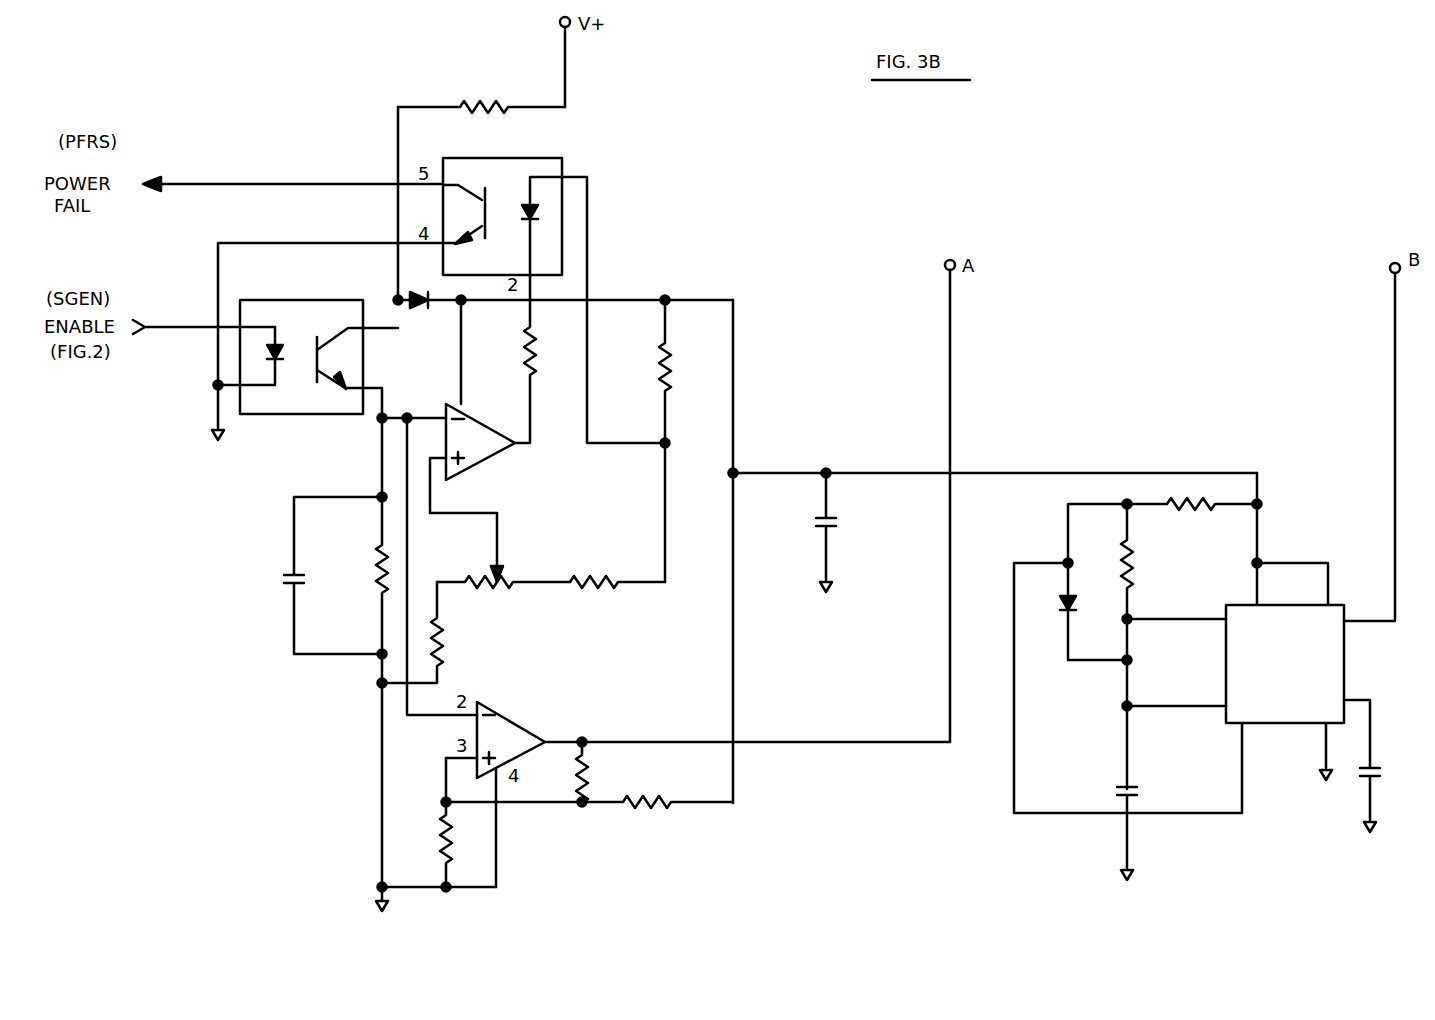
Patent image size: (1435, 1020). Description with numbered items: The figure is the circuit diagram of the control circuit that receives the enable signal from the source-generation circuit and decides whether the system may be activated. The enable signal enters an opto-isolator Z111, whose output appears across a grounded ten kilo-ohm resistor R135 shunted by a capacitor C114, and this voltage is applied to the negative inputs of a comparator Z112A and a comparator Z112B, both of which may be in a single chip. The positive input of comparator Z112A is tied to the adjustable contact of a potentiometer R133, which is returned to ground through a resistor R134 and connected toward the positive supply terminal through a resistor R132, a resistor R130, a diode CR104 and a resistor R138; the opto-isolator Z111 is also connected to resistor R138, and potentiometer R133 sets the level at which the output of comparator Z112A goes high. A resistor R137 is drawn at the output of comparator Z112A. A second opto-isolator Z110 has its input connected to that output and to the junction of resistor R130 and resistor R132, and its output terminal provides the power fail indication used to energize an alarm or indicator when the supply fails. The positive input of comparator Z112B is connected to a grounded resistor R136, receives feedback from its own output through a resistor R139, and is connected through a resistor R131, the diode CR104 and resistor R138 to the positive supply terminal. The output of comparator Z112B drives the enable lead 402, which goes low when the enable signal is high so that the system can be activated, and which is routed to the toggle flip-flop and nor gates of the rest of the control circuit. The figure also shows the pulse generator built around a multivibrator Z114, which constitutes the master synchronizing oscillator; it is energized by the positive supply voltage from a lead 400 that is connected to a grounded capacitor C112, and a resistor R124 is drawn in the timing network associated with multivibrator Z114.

The resistor R138 is at (468, 104).
The second opto-isolator Z110 is at (500, 170).
The opto-isolator Z111 is at (296, 300).
The diode CR104 is at (432, 310).
The resistor R137 is at (528, 338).
The resistor R130 is at (658, 356).
The comparator Z112A is at (490, 452).
The capacitor C114 is at (280, 578).
The resistor R135 is at (374, 568).
The potentiometer R133 is at (494, 586).
The resistor R132 is at (586, 586).
The resistor R134 is at (440, 648).
The comparator Z112B is at (522, 730).
The resistor R139 is at (590, 782).
The resistor R136 is at (438, 844).
The resistor R131 is at (650, 806).
The capacitor C112 is at (838, 522).
The lead 400 is at (1073, 473).
The enable lead 402 is at (948, 608).
The resistor R124 is at (1218, 511).
The multivibrator Z114 is at (1328, 672).